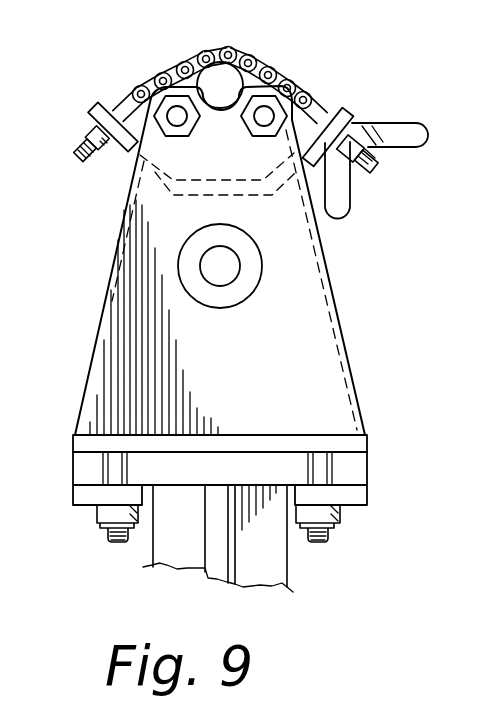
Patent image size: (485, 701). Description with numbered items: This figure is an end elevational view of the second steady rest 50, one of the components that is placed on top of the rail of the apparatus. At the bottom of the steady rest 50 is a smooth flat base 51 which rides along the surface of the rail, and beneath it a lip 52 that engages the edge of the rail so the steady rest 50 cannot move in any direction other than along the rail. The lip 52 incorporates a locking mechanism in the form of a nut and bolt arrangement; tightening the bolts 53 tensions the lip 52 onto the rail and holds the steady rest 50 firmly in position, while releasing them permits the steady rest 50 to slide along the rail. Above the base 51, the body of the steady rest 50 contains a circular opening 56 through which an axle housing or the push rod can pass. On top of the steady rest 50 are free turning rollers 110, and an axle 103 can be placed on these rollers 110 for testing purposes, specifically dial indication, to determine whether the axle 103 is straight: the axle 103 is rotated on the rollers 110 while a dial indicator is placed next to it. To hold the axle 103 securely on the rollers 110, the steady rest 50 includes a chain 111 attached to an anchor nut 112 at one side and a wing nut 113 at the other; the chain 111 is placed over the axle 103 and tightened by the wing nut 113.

The steady rest 50 is at (315, 335).
The base 51 is at (357, 443).
The lip 52 is at (360, 488).
The bolt 53 is at (328, 536).
The circular opening 56 is at (262, 282).
The axle 103 is at (262, 65).
The rollers 110 is at (308, 93).
The chain 111 is at (231, 78).
The anchor nut 112 is at (83, 125).
The wing nut 113 is at (417, 150).